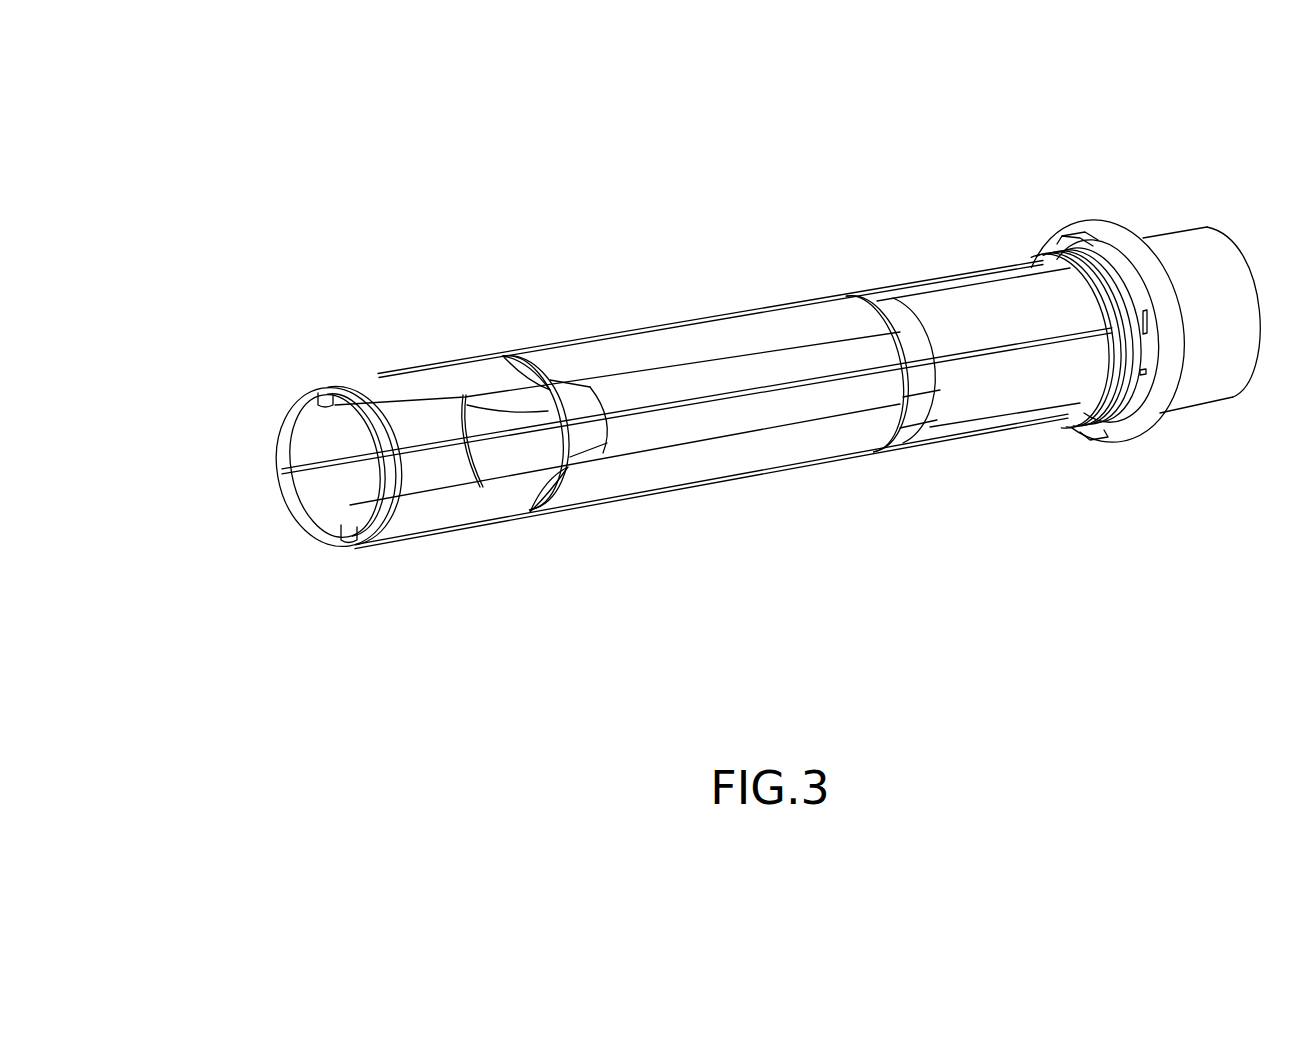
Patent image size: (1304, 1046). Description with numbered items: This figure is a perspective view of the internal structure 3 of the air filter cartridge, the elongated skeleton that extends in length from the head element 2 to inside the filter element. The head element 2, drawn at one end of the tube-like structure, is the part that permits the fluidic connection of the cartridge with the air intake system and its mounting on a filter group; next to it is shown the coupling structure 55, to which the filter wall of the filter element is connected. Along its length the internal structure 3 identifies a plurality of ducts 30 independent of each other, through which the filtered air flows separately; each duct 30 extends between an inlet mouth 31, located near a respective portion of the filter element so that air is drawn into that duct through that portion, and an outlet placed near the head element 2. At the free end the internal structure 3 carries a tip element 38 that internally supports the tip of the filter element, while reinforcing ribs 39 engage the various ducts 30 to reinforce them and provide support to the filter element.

The head element 2 is at (1113, 355).
The internal structure 3 is at (640, 381).
The duct 30 is at (440, 422).
The inlet mouth 31 is at (879, 470).
The tip element 38 is at (290, 435).
The reinforcing rib 39 is at (473, 375).
The coupling structure 55 is at (1048, 222).